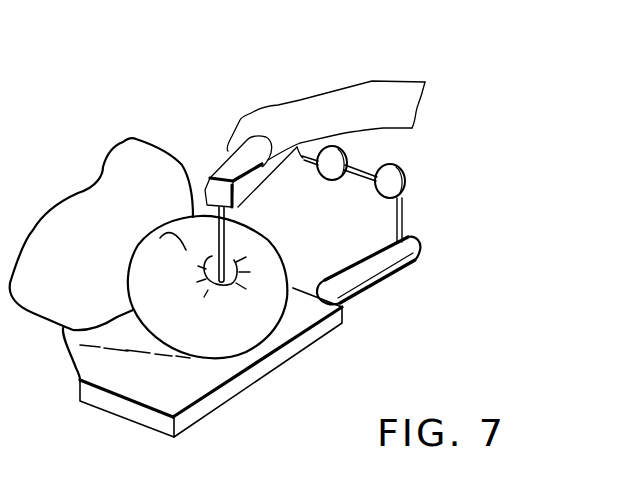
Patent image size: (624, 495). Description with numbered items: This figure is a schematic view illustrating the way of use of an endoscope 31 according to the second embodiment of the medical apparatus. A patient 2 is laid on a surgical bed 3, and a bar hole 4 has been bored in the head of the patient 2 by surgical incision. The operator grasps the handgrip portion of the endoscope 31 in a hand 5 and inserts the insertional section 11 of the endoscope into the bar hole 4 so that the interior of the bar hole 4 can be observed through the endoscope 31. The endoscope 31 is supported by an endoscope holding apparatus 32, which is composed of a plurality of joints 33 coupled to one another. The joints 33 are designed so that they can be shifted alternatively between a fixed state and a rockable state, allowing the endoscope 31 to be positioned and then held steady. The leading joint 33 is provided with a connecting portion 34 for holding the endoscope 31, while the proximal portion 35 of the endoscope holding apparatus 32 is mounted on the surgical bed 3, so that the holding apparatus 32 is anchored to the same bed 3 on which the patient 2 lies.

The patient 2 is at (266, 348).
The surgical bed 3 is at (195, 413).
The bar hole 4 is at (240, 254).
The hand 5 is at (388, 90).
The probe needle 11 is at (226, 231).
The endoscope 31 is at (200, 149).
The endoscope holding apparatus 32 is at (415, 202).
The joints 33 is at (365, 167).
The connecting portion 34 is at (312, 162).
The proximal portion 35 is at (400, 268).